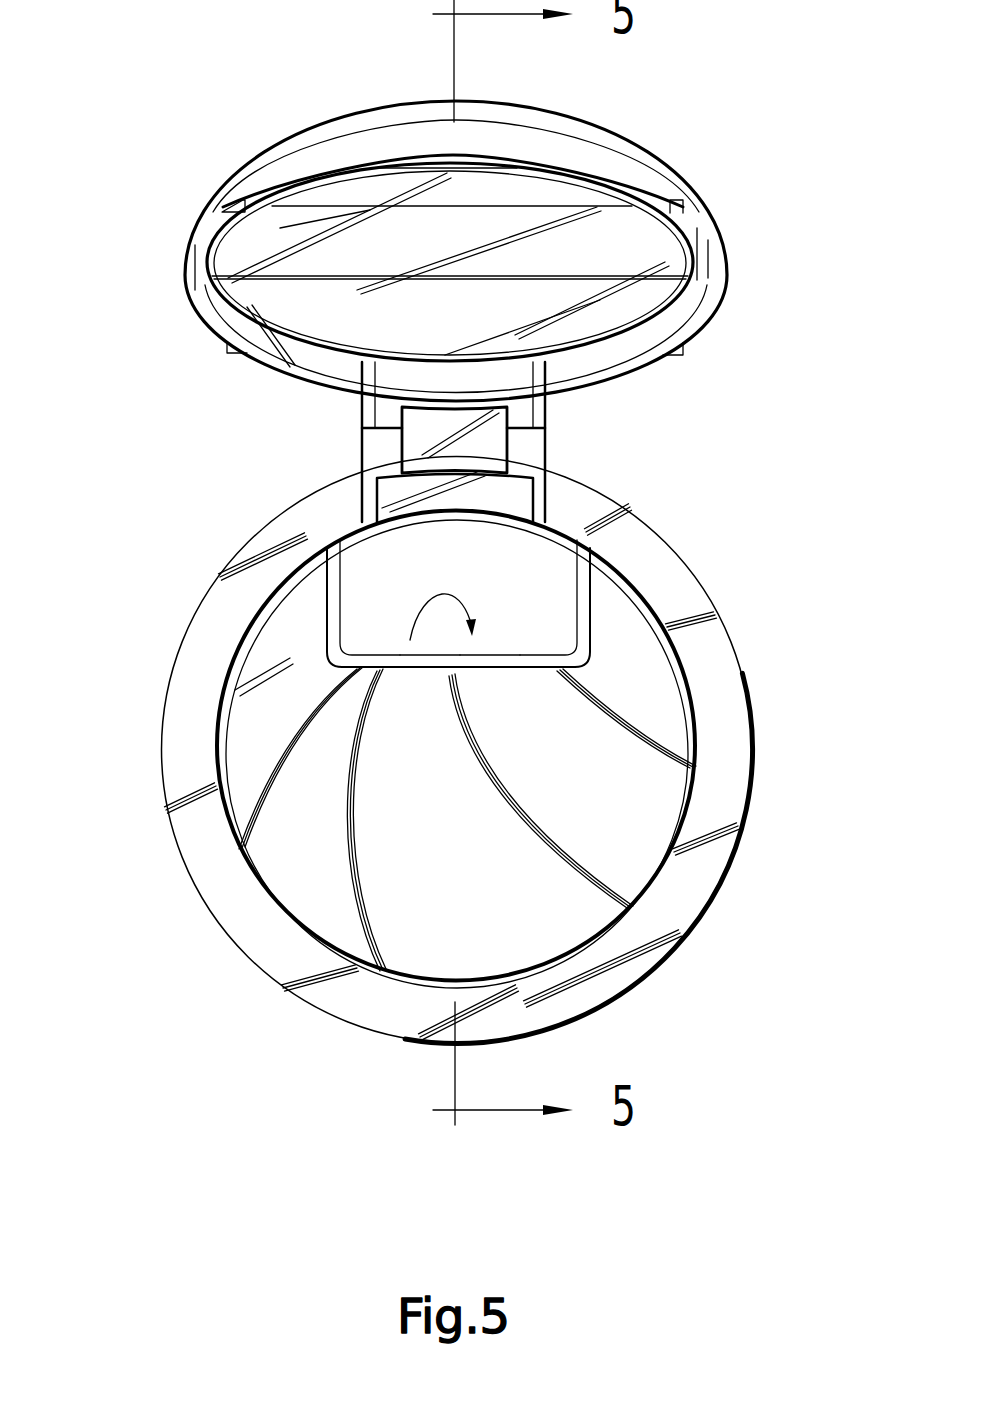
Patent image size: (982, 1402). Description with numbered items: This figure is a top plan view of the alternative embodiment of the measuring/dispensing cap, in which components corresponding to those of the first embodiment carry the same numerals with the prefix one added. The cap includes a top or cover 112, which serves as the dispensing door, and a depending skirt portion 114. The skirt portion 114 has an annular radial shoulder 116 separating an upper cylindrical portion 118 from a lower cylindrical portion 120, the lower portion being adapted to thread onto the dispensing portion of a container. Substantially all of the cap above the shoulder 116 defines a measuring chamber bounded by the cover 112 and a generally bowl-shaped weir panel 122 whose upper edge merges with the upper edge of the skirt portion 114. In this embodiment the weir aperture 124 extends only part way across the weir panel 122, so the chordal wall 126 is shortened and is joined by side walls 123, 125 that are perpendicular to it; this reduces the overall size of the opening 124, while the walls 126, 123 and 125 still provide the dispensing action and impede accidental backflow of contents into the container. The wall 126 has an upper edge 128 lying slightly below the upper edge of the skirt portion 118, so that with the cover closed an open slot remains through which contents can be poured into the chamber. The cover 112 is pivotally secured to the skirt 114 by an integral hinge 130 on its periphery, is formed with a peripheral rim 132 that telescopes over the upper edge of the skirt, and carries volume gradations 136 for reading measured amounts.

The top or cover 112 is at (456, 231).
The depending skirt portion 114 is at (459, 750).
The annular radial shoulder 116 is at (708, 692).
The upper cylindrical portion of skirt 118 is at (662, 866).
The lower cylindrical portion of skirt 120 is at (751, 755).
The weir panel 122 is at (237, 742).
The side wall 123 is at (342, 597).
The weir aperture 124 is at (410, 640).
The side wall 125 is at (573, 590).
The wall 126 is at (430, 668).
The upper edge of wall 128 is at (503, 667).
The hinge 130 is at (530, 448).
The peripheral rim 132 is at (277, 167).
The volume gradations 136 is at (484, 277).